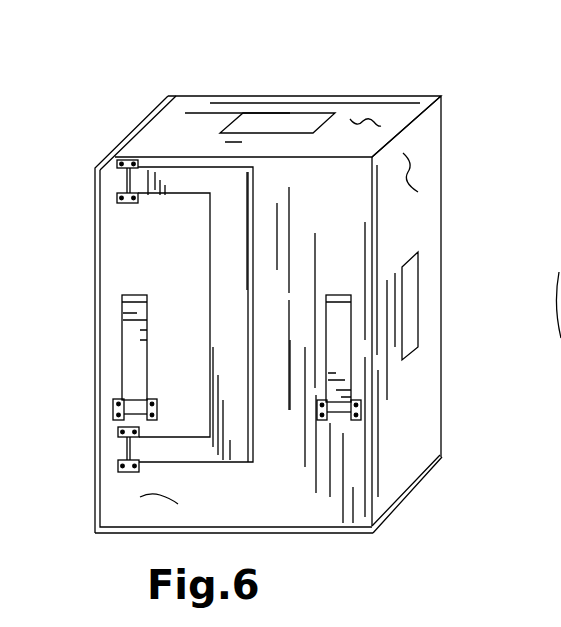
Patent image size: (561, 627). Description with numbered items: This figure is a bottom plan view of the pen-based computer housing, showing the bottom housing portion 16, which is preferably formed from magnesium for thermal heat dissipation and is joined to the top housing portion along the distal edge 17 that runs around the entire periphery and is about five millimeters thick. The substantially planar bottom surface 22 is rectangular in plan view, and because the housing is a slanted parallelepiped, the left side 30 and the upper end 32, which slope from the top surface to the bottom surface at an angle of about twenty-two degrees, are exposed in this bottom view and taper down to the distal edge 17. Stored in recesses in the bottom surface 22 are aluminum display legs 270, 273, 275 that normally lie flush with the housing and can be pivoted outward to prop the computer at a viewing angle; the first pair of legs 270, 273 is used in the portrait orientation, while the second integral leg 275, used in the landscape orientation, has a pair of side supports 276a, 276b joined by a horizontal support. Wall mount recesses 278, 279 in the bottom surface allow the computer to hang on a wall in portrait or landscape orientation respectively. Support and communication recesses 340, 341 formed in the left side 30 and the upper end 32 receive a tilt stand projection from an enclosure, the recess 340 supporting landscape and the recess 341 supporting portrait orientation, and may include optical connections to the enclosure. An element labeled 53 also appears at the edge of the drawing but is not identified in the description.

The bottom housing portion 16 is at (388, 490).
The distal edge 17 is at (130, 130).
The bottom surface 22 is at (158, 500).
The left side 30 is at (411, 173).
The upper end 32 is at (372, 118).
The hose 53 is at (560, 266).
The display leg 270 is at (133, 353).
The display leg 273 is at (333, 360).
The second integral leg 275 is at (205, 238).
The side support 276a is at (167, 462).
The side support 276b is at (177, 193).
The wall mount recess 278 is at (284, 195).
The wall mount recess 279 is at (360, 350).
The support and communication recess 340 is at (413, 278).
The support and communication recess 341 is at (292, 123).